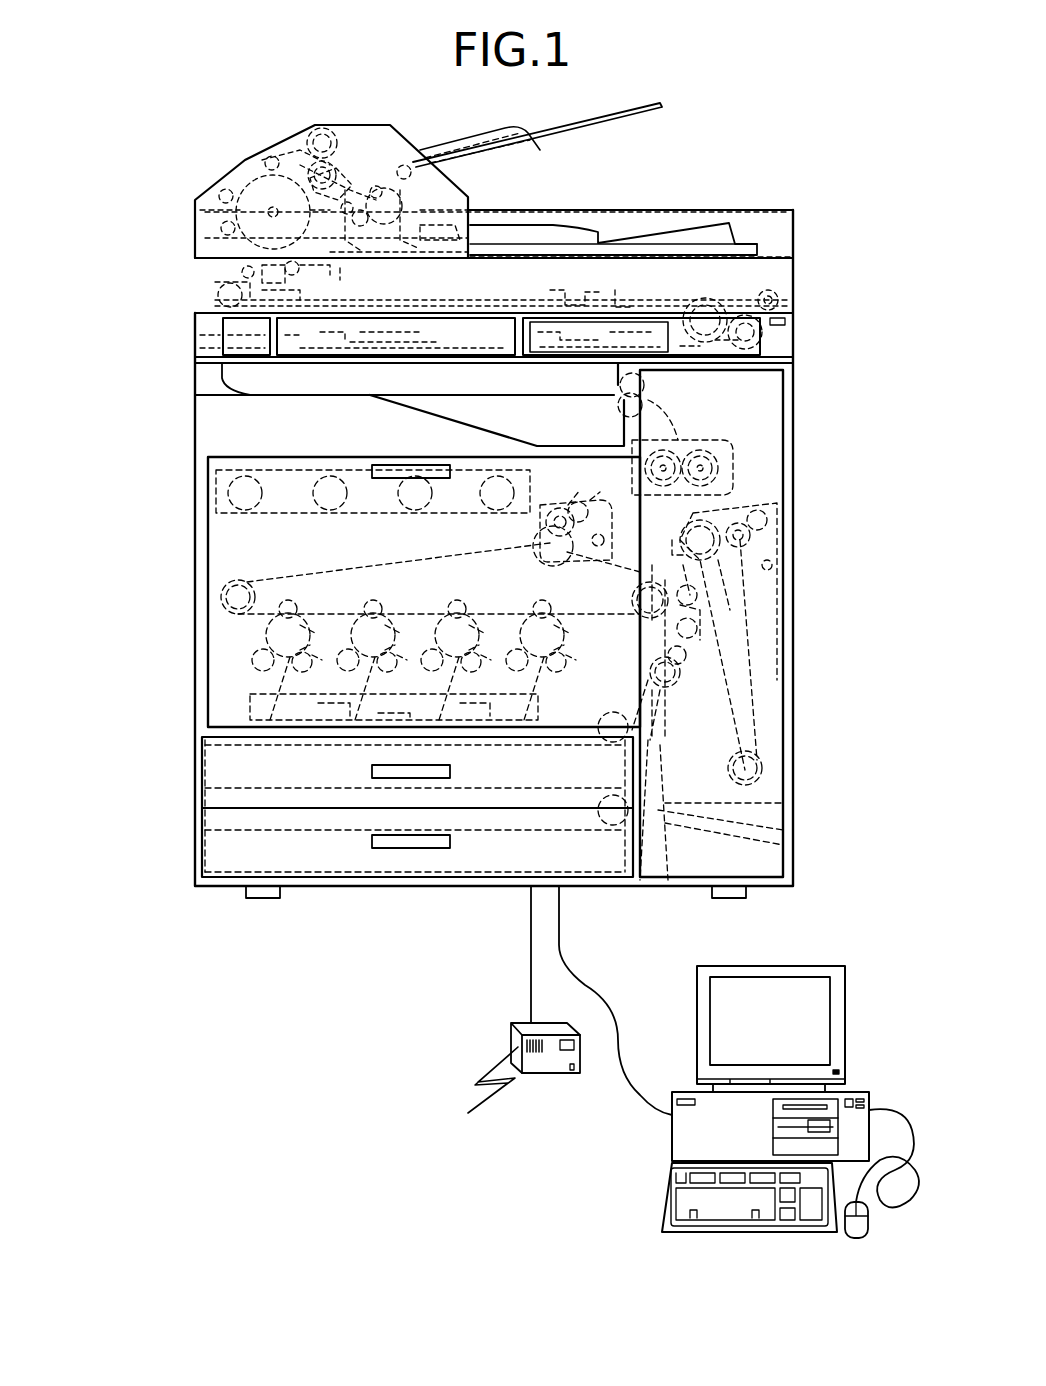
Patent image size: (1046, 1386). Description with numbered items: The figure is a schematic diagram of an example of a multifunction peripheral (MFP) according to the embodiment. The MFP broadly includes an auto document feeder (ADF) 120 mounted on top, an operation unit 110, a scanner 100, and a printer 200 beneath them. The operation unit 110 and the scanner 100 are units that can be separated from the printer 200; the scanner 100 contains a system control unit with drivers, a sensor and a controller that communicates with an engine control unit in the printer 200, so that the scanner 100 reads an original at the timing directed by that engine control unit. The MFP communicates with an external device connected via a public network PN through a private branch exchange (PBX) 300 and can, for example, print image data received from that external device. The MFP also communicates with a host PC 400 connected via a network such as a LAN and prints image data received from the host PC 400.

The scanner 100 is at (197, 284).
The operation unit 110 is at (762, 343).
The auto document feeder (ADF) 120 is at (207, 191).
The printer 200 is at (197, 591).
The private branch exchange (PBX) 300 is at (549, 1077).
The host PC 400 is at (812, 966).
The public network PN is at (479, 1094).